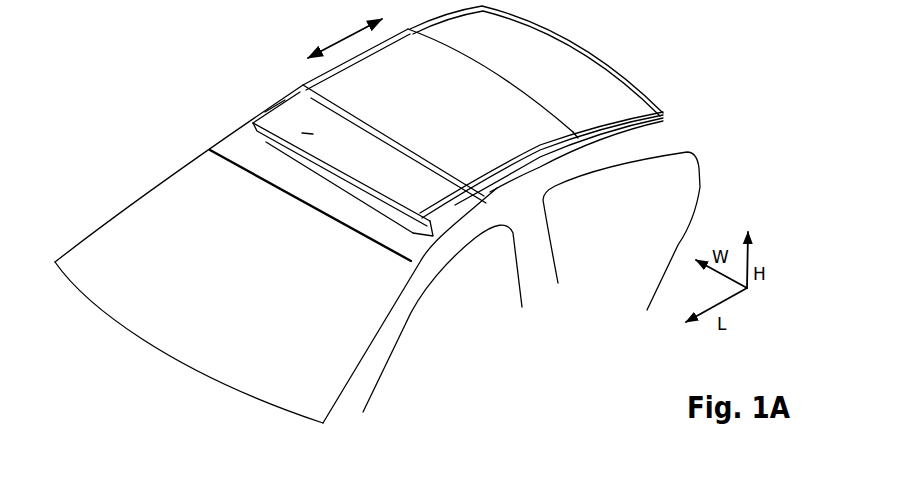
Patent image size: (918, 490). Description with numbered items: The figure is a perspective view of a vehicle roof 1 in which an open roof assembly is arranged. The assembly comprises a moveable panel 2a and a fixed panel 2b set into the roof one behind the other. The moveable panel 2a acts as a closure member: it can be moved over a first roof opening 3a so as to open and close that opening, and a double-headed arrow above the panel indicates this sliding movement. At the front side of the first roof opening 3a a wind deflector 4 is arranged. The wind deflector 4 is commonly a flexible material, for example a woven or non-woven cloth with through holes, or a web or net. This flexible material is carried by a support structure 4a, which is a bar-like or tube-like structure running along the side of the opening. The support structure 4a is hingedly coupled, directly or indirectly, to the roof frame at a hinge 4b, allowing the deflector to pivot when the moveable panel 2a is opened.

The vehicle roof 1 is at (652, 149).
The moveable panel 2a is at (450, 108).
The fixed panel 2b is at (558, 78).
The first roof opening 3a is at (310, 132).
The wind deflector 4 is at (267, 151).
The support structure 4a is at (390, 205).
The hinge 4b is at (269, 102).